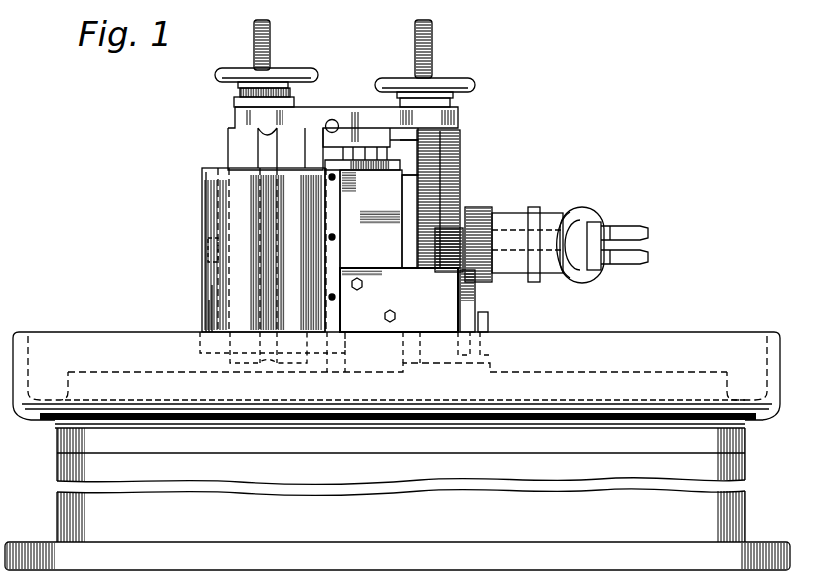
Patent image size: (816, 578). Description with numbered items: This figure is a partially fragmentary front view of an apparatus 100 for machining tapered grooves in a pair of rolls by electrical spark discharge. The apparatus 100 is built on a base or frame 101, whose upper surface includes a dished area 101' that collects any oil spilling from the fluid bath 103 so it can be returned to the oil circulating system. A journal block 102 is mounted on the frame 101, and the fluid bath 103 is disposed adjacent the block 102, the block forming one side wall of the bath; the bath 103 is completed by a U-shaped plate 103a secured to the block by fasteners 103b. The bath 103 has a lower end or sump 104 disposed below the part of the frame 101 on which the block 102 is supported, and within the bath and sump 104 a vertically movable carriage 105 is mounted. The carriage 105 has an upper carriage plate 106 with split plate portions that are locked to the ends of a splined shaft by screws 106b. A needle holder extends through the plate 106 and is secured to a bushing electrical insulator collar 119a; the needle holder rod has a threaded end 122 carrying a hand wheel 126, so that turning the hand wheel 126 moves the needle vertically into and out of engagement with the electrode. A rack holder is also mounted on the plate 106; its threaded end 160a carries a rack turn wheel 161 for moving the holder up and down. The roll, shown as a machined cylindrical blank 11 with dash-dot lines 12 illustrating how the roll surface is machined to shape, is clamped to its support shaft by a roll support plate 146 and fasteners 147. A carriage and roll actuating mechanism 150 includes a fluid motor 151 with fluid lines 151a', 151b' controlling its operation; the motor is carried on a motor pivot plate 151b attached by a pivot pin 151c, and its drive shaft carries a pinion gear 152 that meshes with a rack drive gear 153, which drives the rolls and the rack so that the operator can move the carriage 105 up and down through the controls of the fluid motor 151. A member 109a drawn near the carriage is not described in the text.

The dished area 101' is at (396, 367).
The base or frame 101 is at (405, 366).
The sump 104 is at (58, 496).
The threaded end 122 is at (272, 58).
The hand wheel 126 is at (312, 79).
The bushing electrical insulator collar 119a is at (233, 101).
The threaded end 160a is at (433, 58).
The rack turn wheel 161 is at (476, 86).
The carriage 105 is at (231, 119).
The fasteners or screws 106b is at (334, 120).
The upper carriage plate 106 is at (372, 125).
The support member 109a is at (409, 157).
The cylindrical blank 11 is at (258, 134).
The apparatus 100 is at (204, 212).
The fasteners 147 is at (218, 183).
The roll support plates 146 is at (220, 242).
The fluid bath 103 is at (213, 264).
The dash-dot lines 12 is at (211, 287).
The U-shaped plate 103a is at (208, 305).
The fasteners 103b is at (336, 237).
The journal block 102 is at (385, 205).
The pinion gear 152 is at (435, 247).
The carriage and roll actuating mechanism 150 is at (467, 162).
The rack drive gear 153 is at (448, 192).
The fluid motor 151 is at (545, 222).
The fluid line 151a' is at (644, 222).
The fluid line 151b' is at (639, 269).
The motor pivot plate 151b is at (493, 301).
The pivot pin 151c is at (489, 324).